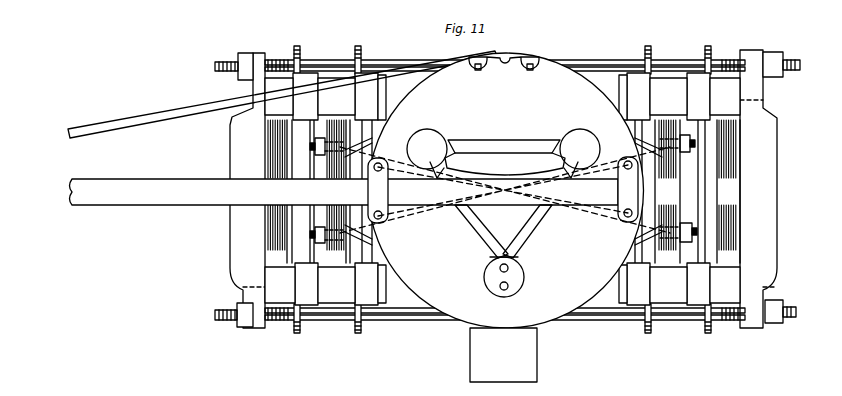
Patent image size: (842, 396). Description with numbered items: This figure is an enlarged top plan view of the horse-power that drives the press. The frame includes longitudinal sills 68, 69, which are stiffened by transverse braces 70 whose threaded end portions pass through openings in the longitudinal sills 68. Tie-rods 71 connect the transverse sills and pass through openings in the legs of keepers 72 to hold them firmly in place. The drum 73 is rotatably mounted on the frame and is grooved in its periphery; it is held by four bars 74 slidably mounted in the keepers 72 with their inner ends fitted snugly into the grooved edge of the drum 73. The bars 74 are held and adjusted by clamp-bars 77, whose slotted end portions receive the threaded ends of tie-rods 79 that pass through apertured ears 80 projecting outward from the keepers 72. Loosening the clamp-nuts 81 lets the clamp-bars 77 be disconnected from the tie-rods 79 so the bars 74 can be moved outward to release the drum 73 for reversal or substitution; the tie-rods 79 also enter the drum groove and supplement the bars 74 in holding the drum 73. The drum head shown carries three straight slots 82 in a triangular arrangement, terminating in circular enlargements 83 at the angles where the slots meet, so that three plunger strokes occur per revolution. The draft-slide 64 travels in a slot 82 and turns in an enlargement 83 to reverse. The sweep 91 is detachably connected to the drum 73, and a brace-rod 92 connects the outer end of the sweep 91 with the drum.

The draft-slide 64 is at (503, 355).
The longitudinal sill 68 is at (503, 198).
The longitudinal sill 69 is at (501, 190).
The transverse brace 70 is at (652, 230).
The tie-rod 71 is at (310, 224).
The keeper 72 is at (501, 189).
The drum 73 is at (506, 190).
The bar 74 is at (502, 189).
The clamp-bar 77 is at (503, 189).
The tie-rod 79 is at (582, 61).
The apertured ear 80 is at (298, 52).
The clamp-nut 81 is at (243, 49).
The slot 82 is at (549, 234).
The circular enlargement 83 is at (441, 134).
The sweep 91 is at (344, 192).
The brace-rod 92 is at (130, 128).